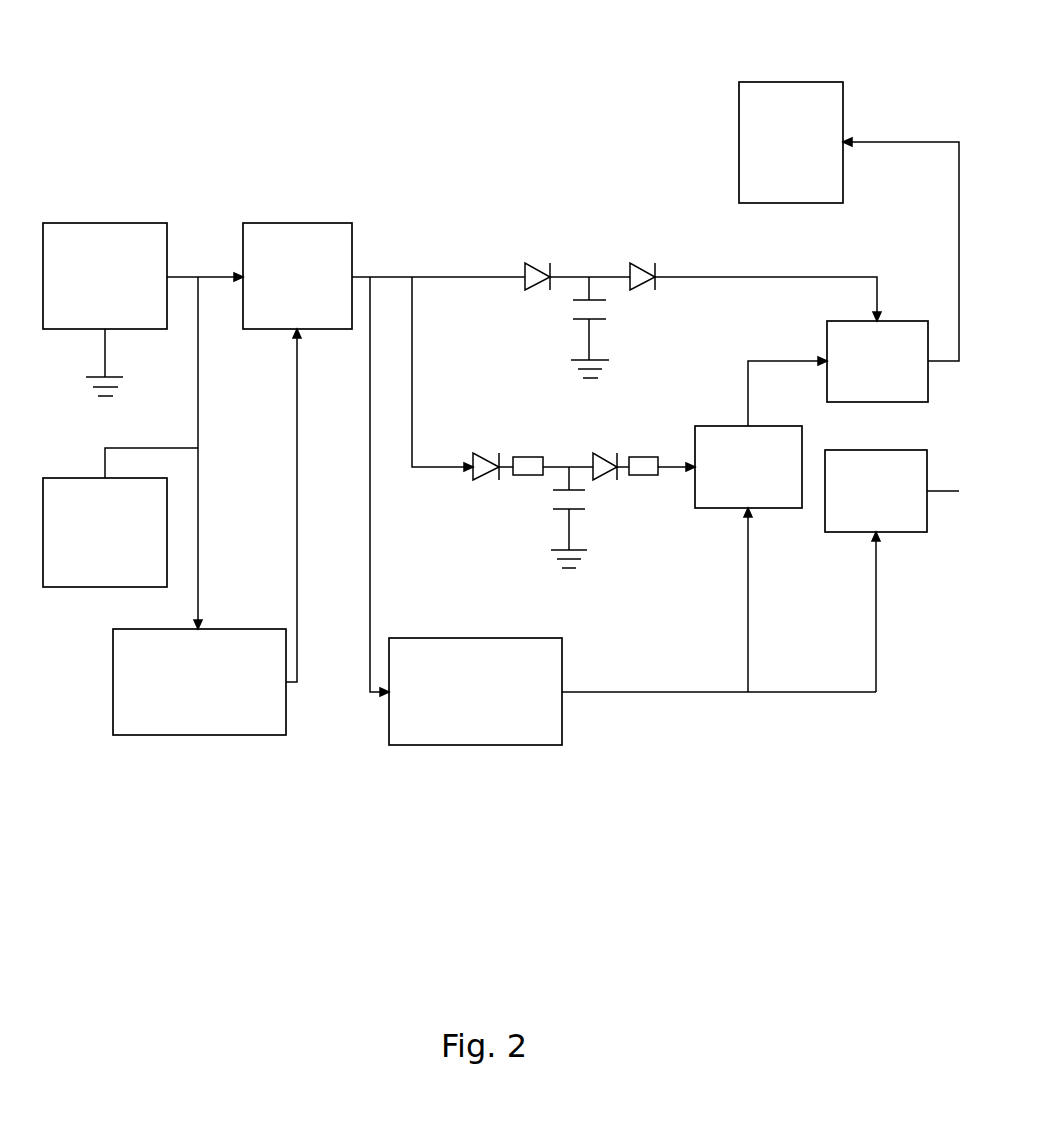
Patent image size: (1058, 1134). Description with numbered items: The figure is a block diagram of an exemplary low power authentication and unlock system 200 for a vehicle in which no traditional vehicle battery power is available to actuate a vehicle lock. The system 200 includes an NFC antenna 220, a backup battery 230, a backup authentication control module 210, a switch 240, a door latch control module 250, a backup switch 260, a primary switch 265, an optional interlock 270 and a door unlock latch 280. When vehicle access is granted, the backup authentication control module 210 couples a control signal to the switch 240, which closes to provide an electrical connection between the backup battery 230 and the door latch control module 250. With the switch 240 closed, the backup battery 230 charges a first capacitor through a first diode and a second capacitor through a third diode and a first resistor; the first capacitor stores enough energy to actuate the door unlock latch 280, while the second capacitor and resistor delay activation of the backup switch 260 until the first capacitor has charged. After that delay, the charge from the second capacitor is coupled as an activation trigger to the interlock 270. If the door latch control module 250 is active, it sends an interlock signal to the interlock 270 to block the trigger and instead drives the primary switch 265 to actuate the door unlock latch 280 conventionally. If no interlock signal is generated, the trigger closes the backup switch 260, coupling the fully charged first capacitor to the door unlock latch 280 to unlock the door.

The low power authentication and unlock system 200 is at (523, 43).
The backup authentication control module 210 is at (199, 682).
The NFC antenna 220 is at (105, 532).
The backup battery 230 is at (105, 276).
The switch 240 is at (297, 276).
The door latch control module 250 is at (475, 691).
The backup switch 260 is at (877, 361).
The primary switch 265 is at (876, 491).
The interlock 270 is at (748, 467).
The door unlock latch 280 is at (791, 142).